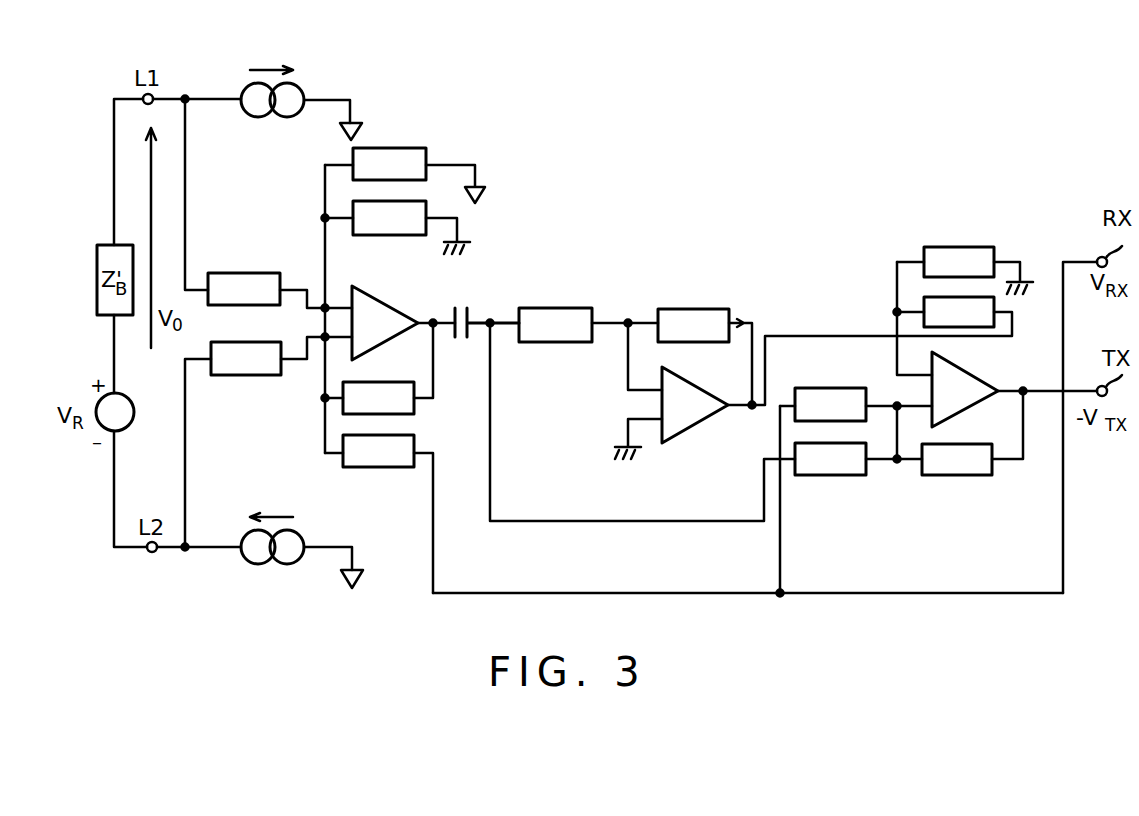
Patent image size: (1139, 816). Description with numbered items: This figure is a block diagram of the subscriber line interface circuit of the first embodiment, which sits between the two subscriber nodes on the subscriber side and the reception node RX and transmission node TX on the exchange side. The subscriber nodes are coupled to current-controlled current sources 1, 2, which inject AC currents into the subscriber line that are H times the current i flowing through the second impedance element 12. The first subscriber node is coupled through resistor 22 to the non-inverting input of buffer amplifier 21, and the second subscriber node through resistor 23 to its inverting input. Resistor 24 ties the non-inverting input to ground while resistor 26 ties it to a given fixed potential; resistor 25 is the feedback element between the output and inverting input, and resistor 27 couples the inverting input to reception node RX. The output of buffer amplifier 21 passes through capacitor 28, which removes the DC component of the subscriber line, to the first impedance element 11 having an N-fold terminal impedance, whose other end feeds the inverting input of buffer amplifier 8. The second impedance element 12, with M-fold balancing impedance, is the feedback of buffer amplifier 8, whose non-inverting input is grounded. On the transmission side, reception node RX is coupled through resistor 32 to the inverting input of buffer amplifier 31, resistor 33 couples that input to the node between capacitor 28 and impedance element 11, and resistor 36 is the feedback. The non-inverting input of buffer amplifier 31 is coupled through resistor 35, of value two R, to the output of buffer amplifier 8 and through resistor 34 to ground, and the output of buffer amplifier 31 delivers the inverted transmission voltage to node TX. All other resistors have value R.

The current-controlled current source 1 is at (299, 96).
The current-controlled current source 2 is at (303, 535).
The buffer amplifier 8 is at (690, 382).
The first impedance element 11 is at (572, 308).
The second impedance element 12 is at (683, 309).
The buffer amplifier 21 is at (383, 302).
The resistor 22 is at (230, 273).
The resistor 23 is at (233, 342).
The resistor 24 is at (405, 201).
The resistor 25 is at (375, 382).
The resistor 26 is at (405, 148).
The resistor 27 is at (395, 435).
The capacitor 28 is at (468, 306).
The buffer amplifier 31 is at (955, 364).
The resistor 32 is at (823, 388).
The resistor 33 is at (815, 475).
The resistor 34 is at (945, 247).
The resistor 35 is at (994, 300).
The resistor 36 is at (950, 444).